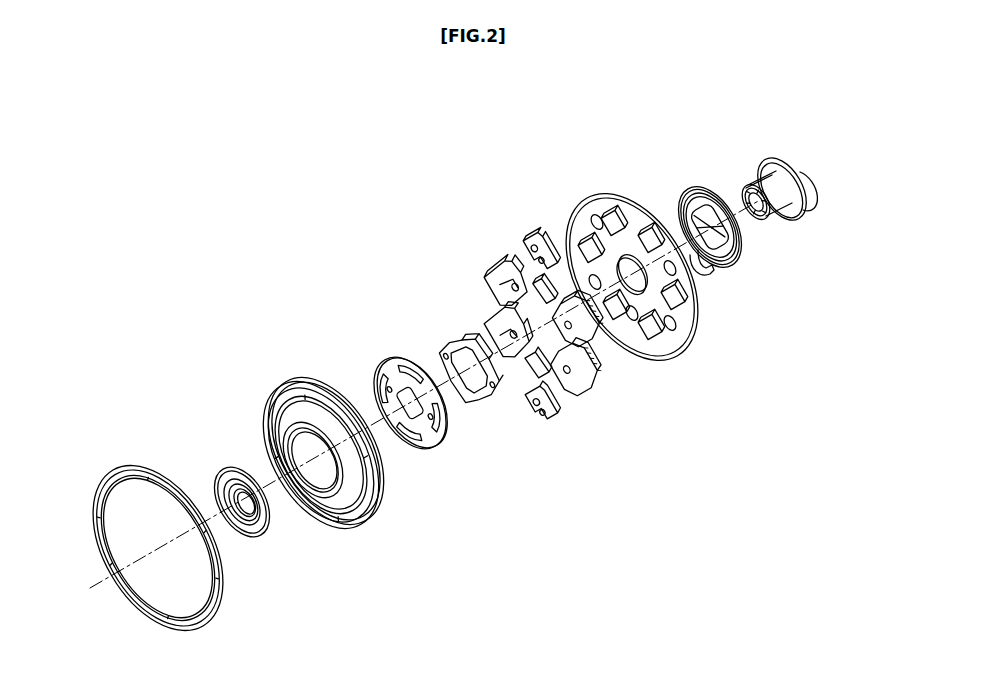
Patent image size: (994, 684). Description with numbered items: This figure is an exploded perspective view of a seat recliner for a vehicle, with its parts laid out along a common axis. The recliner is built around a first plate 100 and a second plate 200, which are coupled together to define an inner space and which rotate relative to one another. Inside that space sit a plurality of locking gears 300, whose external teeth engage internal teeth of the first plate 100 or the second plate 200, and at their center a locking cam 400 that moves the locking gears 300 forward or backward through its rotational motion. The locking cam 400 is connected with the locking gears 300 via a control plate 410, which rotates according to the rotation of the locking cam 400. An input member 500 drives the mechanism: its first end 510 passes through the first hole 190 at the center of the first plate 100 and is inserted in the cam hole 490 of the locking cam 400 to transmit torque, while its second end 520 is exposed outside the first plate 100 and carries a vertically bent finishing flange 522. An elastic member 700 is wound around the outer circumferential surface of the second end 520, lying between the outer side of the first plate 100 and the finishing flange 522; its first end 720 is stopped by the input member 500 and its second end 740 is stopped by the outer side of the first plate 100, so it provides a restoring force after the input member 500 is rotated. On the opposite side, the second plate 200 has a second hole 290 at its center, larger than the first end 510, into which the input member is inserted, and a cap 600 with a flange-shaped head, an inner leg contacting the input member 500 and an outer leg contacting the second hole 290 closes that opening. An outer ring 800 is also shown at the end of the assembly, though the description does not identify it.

The first plate 100 is at (632, 287).
The first hole 190 is at (598, 214).
The second plate 200 is at (319, 462).
The second hole 290 is at (305, 496).
The locking gear 300 is at (500, 278).
The locking cam 400 is at (424, 371).
The control plate 410 is at (383, 362).
The cam hole 490 is at (460, 403).
The input member 500 is at (795, 205).
The first end 510 is at (743, 190).
The second end 520 is at (782, 180).
The finishing flange 522 is at (793, 219).
The cap 600 is at (214, 470).
The elastic member 700 is at (738, 245).
The first end 720 is at (697, 194).
The second end 740 is at (712, 278).
The cover ring 800 is at (121, 466).